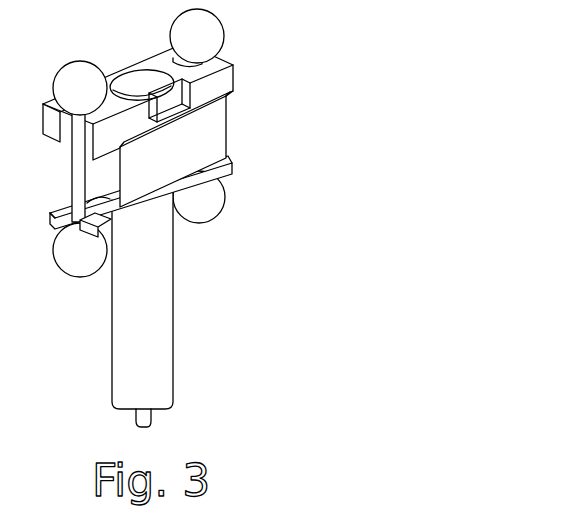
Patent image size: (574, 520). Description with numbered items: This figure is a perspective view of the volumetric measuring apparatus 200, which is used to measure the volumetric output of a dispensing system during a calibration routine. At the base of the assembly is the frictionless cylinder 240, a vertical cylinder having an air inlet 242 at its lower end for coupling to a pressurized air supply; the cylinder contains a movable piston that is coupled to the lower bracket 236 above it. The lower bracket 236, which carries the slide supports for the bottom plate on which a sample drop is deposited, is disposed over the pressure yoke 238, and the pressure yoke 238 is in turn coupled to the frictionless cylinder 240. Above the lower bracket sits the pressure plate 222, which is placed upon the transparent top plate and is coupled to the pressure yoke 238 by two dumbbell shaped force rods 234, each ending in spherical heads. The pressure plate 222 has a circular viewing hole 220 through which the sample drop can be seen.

The volumetric measuring apparatus 200 is at (213, 228).
The circular viewing hole 220 is at (137, 84).
The pressure plate 222 is at (176, 88).
The dumbbell shaped force rods 234 is at (74, 265).
The lower bracket 236 is at (228, 128).
The pressure yoke 238 is at (238, 167).
The frictionless cylinder 240 is at (170, 292).
The air inlet 242 is at (151, 425).